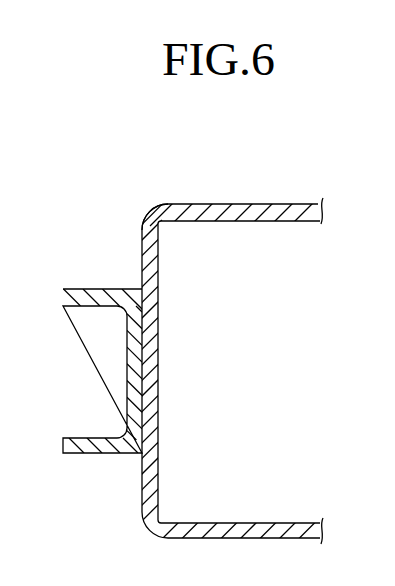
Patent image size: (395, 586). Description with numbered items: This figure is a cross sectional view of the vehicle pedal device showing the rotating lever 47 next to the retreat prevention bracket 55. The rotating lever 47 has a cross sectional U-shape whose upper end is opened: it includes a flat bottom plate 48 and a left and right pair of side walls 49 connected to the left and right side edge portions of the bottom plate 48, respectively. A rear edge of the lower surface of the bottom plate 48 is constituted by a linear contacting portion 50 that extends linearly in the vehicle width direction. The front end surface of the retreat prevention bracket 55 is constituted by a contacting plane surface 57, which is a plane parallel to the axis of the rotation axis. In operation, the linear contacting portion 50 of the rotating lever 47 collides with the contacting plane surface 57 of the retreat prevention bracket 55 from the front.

The rotating lever 47 is at (75, 289).
The bottom plate 48 is at (140, 351).
The side walls 49 is at (108, 289).
The linear contacting portion 50 is at (153, 383).
The retreat prevention bracket 55 is at (284, 212).
The contacting plane surface 57 is at (139, 237).